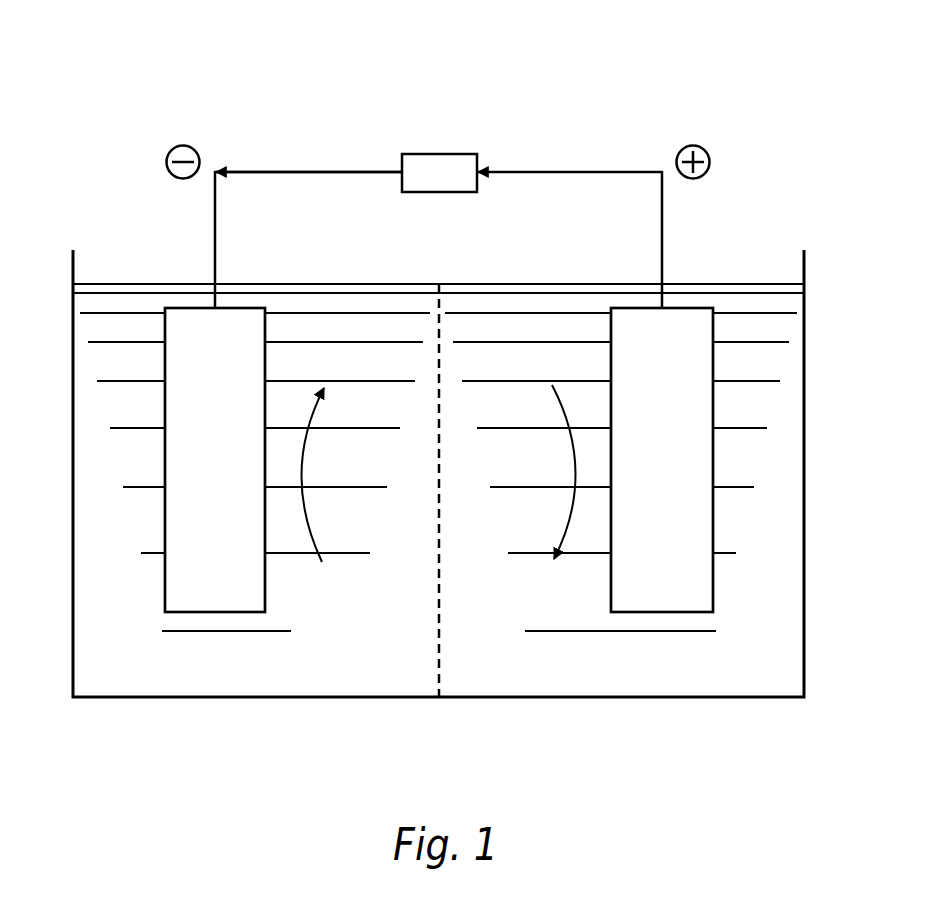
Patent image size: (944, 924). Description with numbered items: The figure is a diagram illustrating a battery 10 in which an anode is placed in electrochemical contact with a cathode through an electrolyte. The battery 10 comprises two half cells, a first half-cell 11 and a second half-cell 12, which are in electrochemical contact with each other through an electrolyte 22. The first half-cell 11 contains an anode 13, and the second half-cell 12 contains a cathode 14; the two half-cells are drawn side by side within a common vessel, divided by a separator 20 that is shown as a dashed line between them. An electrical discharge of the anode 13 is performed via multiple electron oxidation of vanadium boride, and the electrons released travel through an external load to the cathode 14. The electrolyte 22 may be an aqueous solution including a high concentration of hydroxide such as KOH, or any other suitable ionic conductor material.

The battery 10 is at (241, 103).
The first half-cell 11 is at (157, 665).
The second half-cell 12 is at (747, 662).
The anode 13 is at (206, 469).
The cathode 14 is at (651, 469).
The separator 20 is at (439, 649).
The electrolyte 22 is at (235, 674).